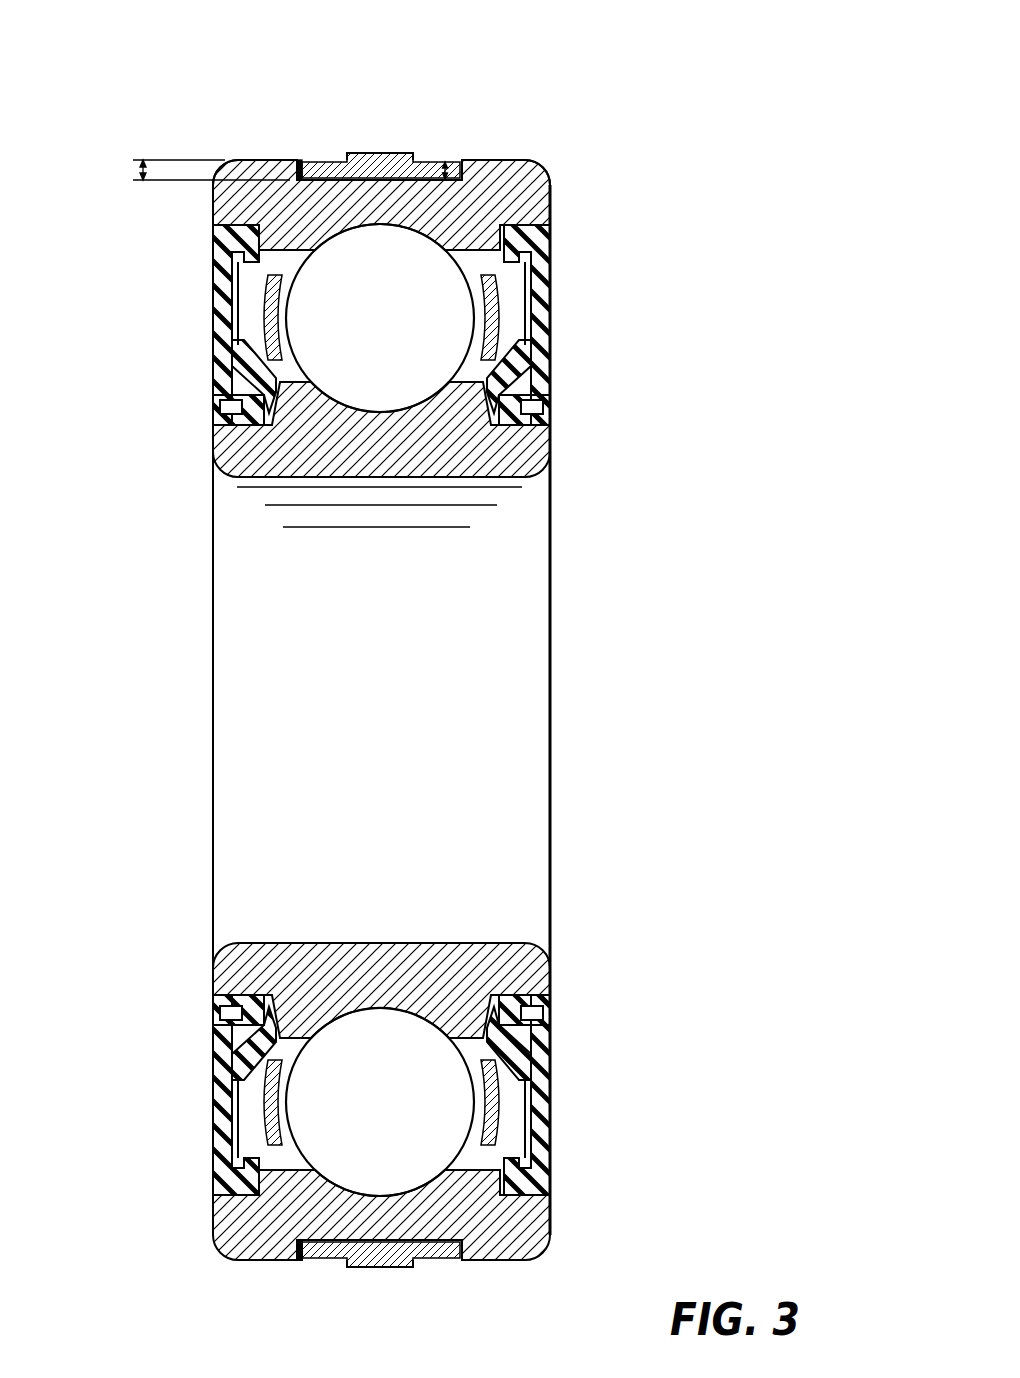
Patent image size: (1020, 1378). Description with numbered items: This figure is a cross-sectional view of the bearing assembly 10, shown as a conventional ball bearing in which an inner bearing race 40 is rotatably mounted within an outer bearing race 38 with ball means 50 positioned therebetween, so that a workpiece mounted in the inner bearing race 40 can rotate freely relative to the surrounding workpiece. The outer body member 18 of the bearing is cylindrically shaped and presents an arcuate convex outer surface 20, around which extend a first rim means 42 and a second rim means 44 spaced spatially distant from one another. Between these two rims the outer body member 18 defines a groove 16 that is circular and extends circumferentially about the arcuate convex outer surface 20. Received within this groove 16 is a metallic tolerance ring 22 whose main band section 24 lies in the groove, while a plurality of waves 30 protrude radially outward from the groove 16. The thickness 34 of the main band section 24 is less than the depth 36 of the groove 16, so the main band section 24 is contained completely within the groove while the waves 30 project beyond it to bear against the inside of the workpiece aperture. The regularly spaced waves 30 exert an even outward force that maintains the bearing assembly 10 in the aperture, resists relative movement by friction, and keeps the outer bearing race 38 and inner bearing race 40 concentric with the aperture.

The bearing assembly 10 is at (768, 536).
The groove 16 is at (306, 172).
The outer body member 18 is at (246, 158).
The arcuate convex outer surface 20 is at (266, 170).
The tolerance ring 22 is at (328, 168).
The main band section 24 is at (422, 176).
The waves 30 is at (373, 154).
The thickness 34 is at (452, 166).
The depth 36 is at (140, 168).
The outer bearing race 38 is at (522, 207).
The inner bearing race 40 is at (520, 450).
The first rim means 42 is at (247, 158).
The second rim means 44 is at (518, 158).
The ball means 50 is at (410, 322).